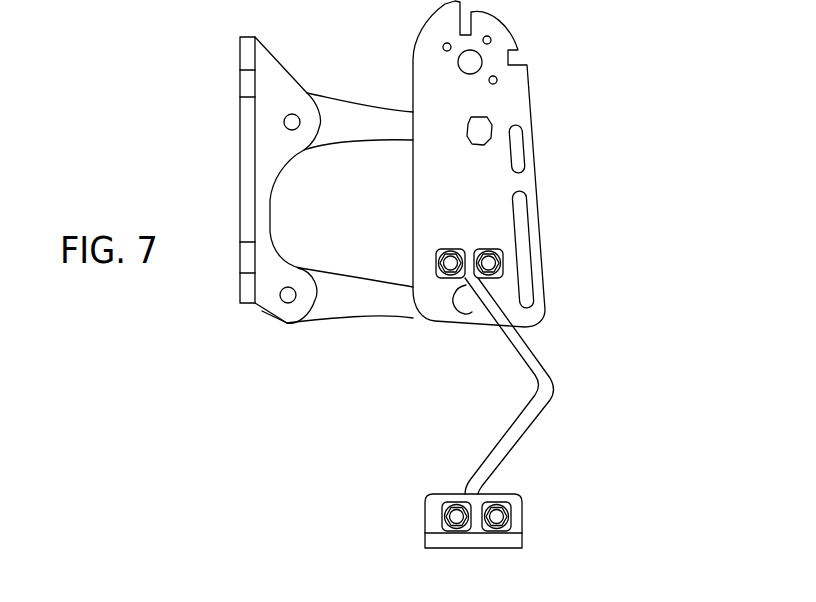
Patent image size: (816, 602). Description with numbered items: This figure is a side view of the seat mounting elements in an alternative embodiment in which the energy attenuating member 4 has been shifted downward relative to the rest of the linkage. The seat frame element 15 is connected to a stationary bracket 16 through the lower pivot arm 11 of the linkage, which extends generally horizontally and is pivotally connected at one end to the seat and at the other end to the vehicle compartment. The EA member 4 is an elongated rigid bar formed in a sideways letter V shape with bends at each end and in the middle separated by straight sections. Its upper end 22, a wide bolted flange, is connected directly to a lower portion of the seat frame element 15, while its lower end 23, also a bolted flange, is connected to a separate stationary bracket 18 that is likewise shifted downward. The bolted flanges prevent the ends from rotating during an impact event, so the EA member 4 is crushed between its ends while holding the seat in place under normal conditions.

The stationary bracket 16 is at (240, 172).
The lower pivot arm 11 is at (362, 308).
The seat frame element 15 is at (533, 95).
The upper end 22 is at (447, 248).
The energy attenuating member 4 is at (535, 357).
The stationary bracket 18 is at (425, 523).
The lower end 23 is at (510, 512).